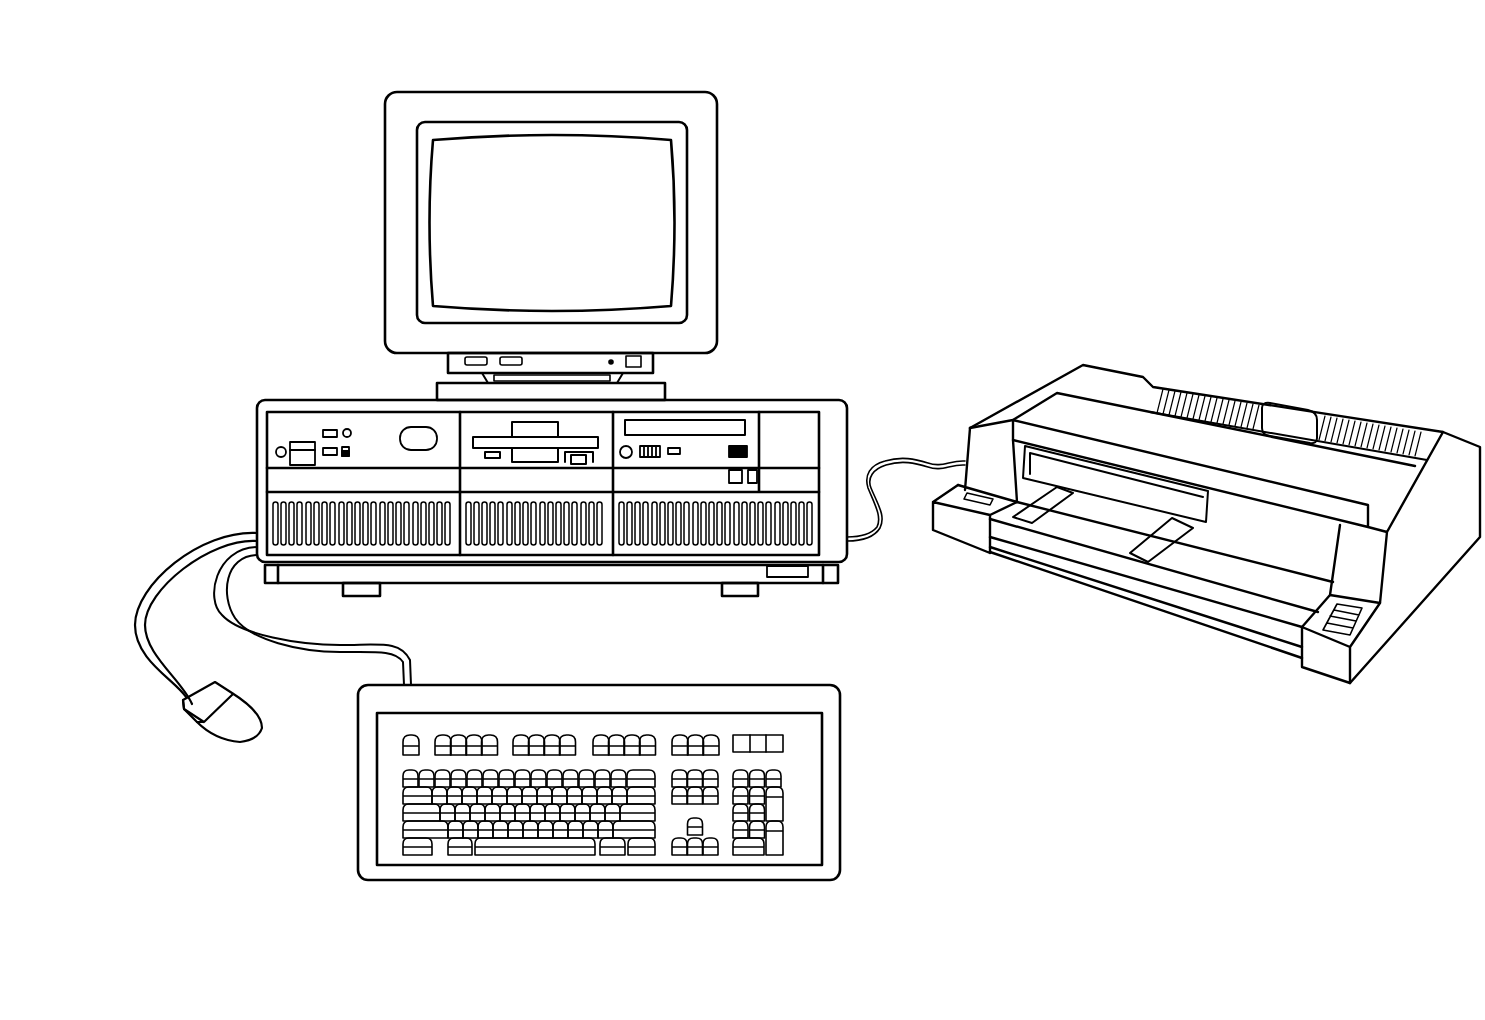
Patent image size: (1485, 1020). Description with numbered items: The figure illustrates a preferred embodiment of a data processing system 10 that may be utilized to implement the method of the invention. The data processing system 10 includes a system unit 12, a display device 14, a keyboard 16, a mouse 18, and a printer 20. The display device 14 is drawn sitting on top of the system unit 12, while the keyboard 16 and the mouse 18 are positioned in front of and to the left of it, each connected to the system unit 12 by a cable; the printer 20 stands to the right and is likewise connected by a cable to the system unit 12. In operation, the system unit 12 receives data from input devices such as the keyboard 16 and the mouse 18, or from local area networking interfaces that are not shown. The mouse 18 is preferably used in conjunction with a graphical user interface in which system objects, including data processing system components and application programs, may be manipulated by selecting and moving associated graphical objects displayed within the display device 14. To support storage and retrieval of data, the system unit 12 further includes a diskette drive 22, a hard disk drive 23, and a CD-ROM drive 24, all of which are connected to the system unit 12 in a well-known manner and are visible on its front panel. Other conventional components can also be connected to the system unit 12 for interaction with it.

The data processing system 10 is at (922, 138).
The system unit 12 is at (554, 482).
The display device 14 is at (728, 241).
The keyboard 16 is at (674, 680).
The mouse 18 is at (213, 727).
The printer 20 is at (992, 390).
The diskette drive 22 is at (533, 462).
The hard disk drive 23 is at (692, 478).
The CD-ROM drive 24 is at (708, 428).